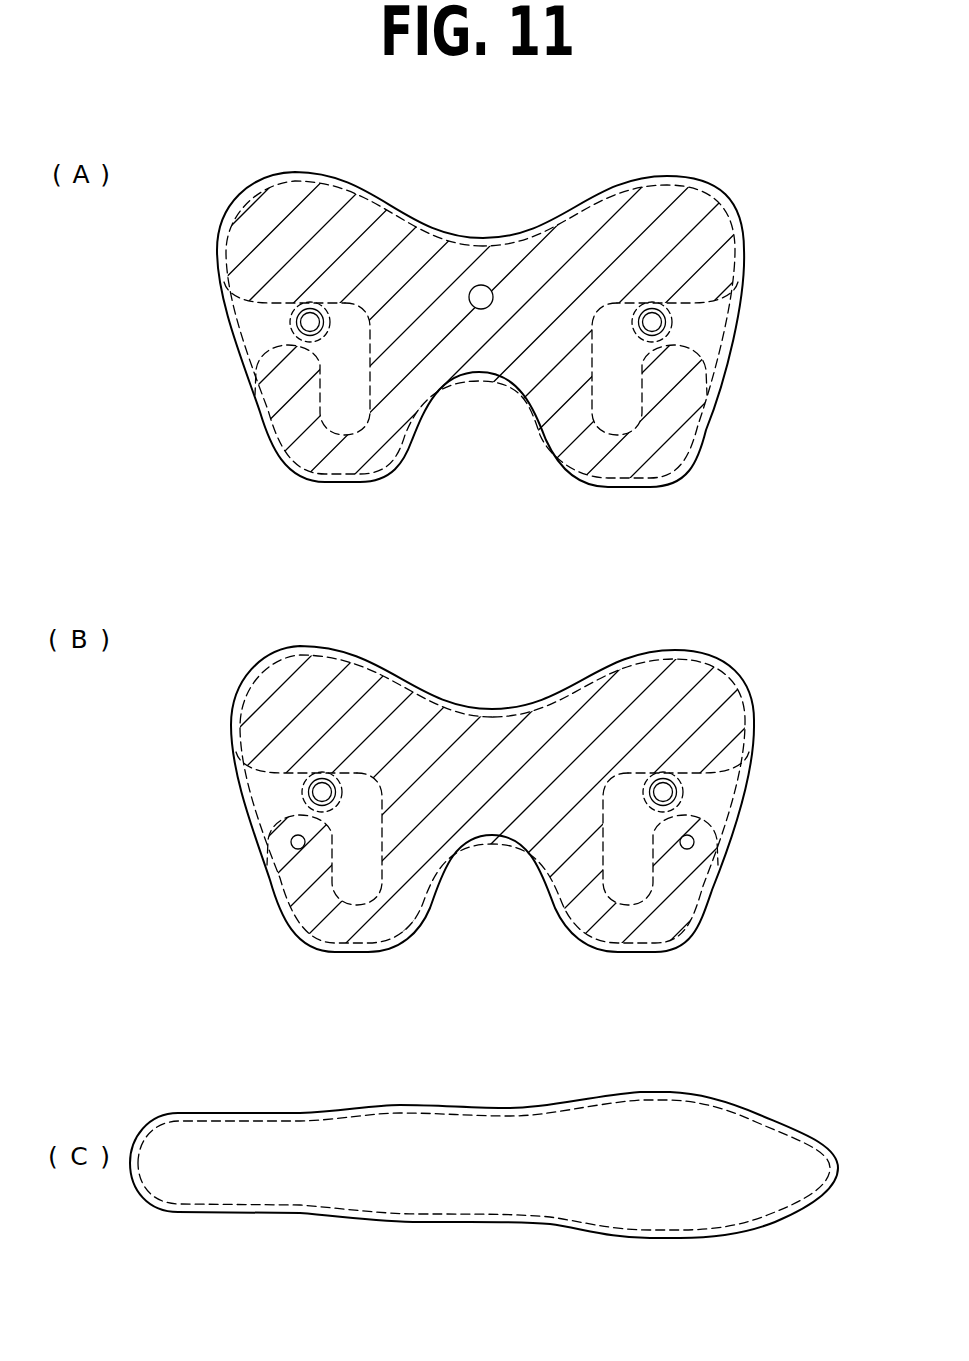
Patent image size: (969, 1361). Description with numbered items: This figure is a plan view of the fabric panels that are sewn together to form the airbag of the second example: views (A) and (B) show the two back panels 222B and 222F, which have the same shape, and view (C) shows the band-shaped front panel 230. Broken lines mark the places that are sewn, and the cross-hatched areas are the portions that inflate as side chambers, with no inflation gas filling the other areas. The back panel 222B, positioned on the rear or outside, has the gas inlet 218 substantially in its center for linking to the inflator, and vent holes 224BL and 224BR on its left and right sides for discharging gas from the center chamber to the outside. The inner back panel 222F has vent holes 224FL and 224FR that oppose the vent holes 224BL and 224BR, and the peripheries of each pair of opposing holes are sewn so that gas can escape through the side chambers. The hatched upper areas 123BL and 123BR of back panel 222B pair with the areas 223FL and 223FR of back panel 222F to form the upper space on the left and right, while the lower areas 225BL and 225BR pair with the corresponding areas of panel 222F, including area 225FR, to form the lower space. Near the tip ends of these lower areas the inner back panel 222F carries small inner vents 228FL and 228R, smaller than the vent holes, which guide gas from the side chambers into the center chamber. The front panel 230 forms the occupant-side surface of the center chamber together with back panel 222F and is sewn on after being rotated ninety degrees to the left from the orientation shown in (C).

The gas inlet 218 is at (481, 285).
The back panel 222B is at (716, 203).
The back panel 222F is at (699, 652).
The rear left upper adhesive region 123BL is at (266, 255).
The rear right upper adhesive region 123BR is at (706, 252).
The area 223FL is at (277, 717).
The front right upper adhesive region 223FR is at (718, 722).
The vent hole 224BL is at (296, 322).
The vent hole 224BR is at (666, 323).
The vent hole 224FL is at (308, 792).
The vent hole 224FR is at (677, 793).
The area 225BL is at (291, 432).
The area 225BR is at (660, 433).
The area 225FR is at (663, 912).
The front left positioning hole 228FL is at (292, 845).
The inner vent 228R is at (693, 850).
The front panel 230 is at (168, 1214).